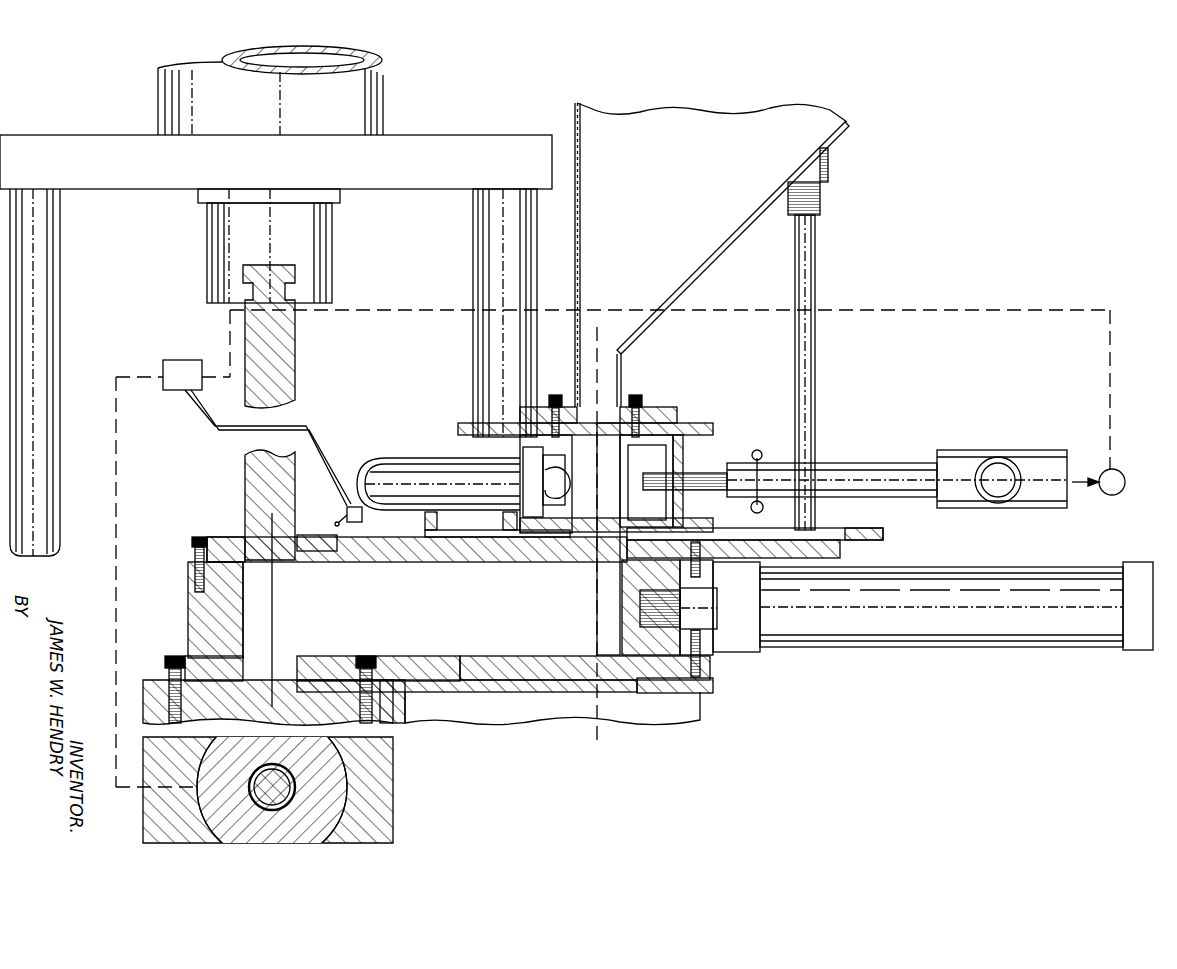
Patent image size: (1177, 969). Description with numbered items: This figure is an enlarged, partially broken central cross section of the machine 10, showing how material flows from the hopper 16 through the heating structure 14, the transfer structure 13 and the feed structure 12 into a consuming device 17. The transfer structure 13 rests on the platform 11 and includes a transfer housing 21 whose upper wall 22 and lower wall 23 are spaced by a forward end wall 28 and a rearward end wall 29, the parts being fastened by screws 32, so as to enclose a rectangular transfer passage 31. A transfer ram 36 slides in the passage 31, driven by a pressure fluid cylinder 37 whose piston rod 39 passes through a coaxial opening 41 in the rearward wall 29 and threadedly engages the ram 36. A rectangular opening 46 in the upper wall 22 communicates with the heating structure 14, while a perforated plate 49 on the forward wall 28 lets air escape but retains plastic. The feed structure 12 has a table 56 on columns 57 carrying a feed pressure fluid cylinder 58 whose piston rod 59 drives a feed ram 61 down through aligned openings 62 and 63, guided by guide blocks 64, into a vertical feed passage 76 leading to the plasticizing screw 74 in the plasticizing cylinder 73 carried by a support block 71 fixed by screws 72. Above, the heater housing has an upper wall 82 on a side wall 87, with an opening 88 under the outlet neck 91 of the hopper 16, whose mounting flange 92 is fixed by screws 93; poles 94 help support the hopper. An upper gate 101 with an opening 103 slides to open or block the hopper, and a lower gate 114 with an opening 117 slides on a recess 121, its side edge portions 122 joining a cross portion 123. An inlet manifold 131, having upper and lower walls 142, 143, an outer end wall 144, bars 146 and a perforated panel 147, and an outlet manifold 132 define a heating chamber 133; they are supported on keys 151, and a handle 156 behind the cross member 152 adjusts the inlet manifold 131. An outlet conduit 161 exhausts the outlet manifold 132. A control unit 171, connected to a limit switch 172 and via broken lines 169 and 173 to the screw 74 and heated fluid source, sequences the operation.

The machine 10 is at (990, 180).
The platform 11 is at (700, 693).
The feed structure 12 is at (31, 122).
The transfer structure 13 is at (1162, 615).
The heating structure 14 is at (400, 428).
The hopper 16 is at (830, 145).
The consuming device 17 is at (400, 808).
The transfer housing 21 is at (515, 692).
The upper wall 22 is at (375, 562).
The lower wall 23 is at (495, 692).
The forward end wall 28 is at (188, 605).
The rearward end wall 29 is at (713, 652).
The transfer passage 31 is at (553, 660).
The screws 32 is at (192, 545).
The transfer ram 36 is at (622, 610).
The pressure fluid cylinder 37 is at (1000, 567).
The piston rod 39 is at (713, 590).
The coaxial opening 41 is at (700, 615).
The rectangular opening 46 is at (575, 548).
The perforated plate 49 is at (243, 630).
The table 56 is at (276, 162).
The upstanding columns 57 is at (50, 310).
The feed pressure fluid cylinder 58 is at (372, 103).
The piston rod 59 is at (318, 243).
The feed ram 61 is at (295, 357).
The rectangular opening 62 is at (298, 562).
The rectangular opening 63 is at (300, 660).
The guide blocks 64 is at (215, 540).
The support block 71 is at (150, 790).
The screws 72 is at (170, 656).
The plasticizing cylinder 73 is at (245, 843).
The plasticizing screw 74 is at (272, 805).
The vertical feed passage 76 is at (300, 760).
The upper wall 82 is at (650, 418).
The side wall 87 is at (505, 453).
The rectangular opening 88 is at (625, 420).
The outlet neck 91 is at (619, 368).
The mounting flange 92 is at (540, 415).
The screws 93 is at (557, 395).
The upstanding poles 94 is at (815, 270).
The upper gate 101 is at (710, 426).
The rectangular opening 103 is at (462, 428).
The lower gate 114 is at (517, 562).
The rectangular vertical opening 117 is at (592, 548).
The recess 121 is at (808, 537).
The side edge portions 122 is at (840, 538).
The cross portion 123 is at (883, 534).
The inlet manifold 131 is at (683, 445).
The outlet manifold 132 is at (490, 562).
The heating chamber 133 is at (597, 539).
The upper wall 142 is at (660, 425).
The lower wall 143 is at (616, 537).
The outer end wall 144 is at (683, 455).
The bars 146 is at (646, 481).
The perforated panel 147 is at (612, 505).
The keys 151 is at (563, 484).
The cross member 152 is at (760, 512).
The handle 156 is at (770, 480).
The outlet conduit 161 is at (372, 460).
The broken lines 169 is at (118, 445).
The control unit 171 is at (180, 360).
The limit switch 172 is at (362, 522).
The broken lines 173 is at (945, 310).